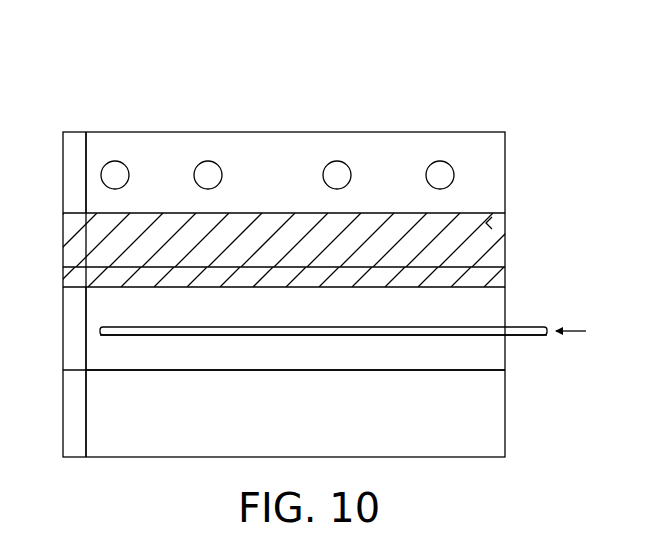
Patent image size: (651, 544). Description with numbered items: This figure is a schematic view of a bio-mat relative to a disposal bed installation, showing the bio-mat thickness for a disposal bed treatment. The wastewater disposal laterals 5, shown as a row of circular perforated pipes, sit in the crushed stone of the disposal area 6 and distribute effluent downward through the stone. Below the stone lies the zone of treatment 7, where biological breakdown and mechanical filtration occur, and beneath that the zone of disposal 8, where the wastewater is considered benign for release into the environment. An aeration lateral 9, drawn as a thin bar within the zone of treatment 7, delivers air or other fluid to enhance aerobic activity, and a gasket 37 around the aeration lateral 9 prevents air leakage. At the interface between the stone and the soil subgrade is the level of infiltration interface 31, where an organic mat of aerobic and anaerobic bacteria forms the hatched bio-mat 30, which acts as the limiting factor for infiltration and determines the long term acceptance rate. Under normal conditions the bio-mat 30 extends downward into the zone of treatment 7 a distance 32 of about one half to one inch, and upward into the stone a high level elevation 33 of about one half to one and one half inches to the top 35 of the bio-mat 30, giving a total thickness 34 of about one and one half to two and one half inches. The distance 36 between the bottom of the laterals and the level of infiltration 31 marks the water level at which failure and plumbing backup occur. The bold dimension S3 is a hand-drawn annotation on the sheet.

The wastewater disposal laterals 5 is at (115, 161).
The disposal area 6 is at (86, 197).
The zone of treatment 7 is at (86, 317).
The zone of disposal 8 is at (86, 413).
The aeration lateral 9 is at (242, 335).
The bio-mat 30 is at (505, 224).
The level of infiltration interface 31 is at (440, 267).
The distance below the level of infiltration 32 is at (305, 317).
The high level elevation 33 is at (172, 212).
The thickness of the bio-mat 34 is at (139, 266).
The top of the bio-mat 35 is at (393, 212).
The distance between bottom of the laterals and the level of infiltration 36 is at (253, 266).
The gasket 37 is at (505, 327).
The dimension S3 is at (463, 252).